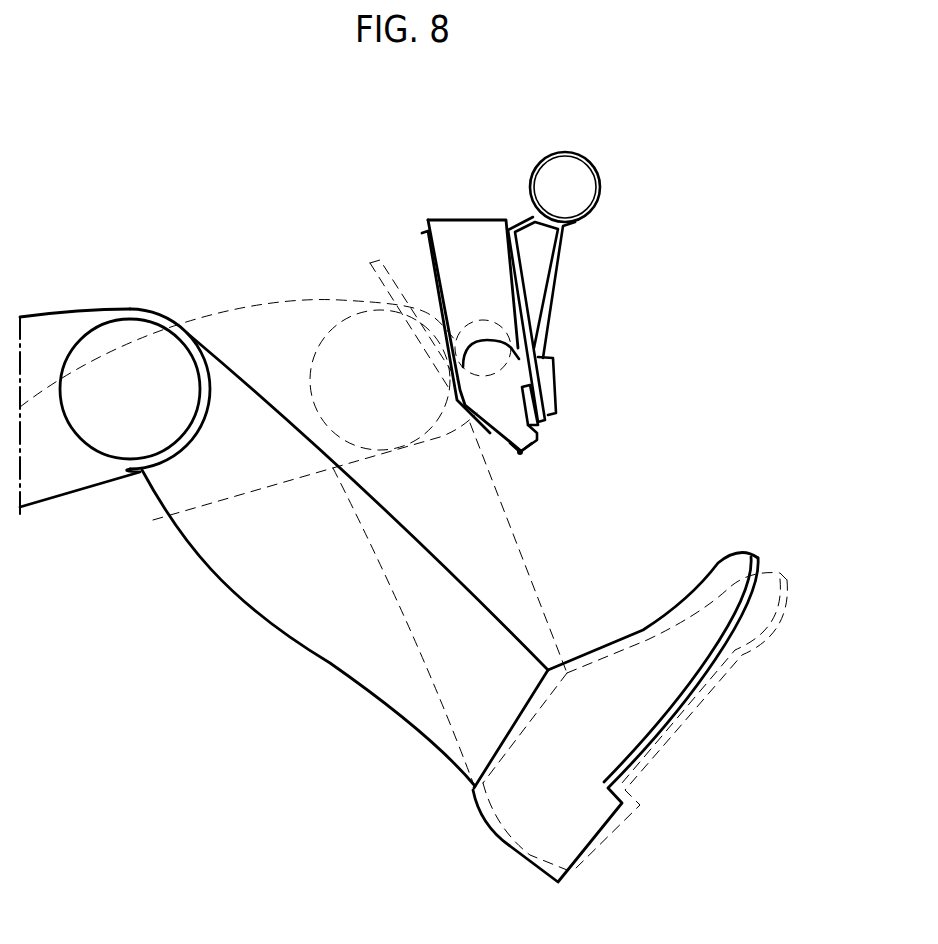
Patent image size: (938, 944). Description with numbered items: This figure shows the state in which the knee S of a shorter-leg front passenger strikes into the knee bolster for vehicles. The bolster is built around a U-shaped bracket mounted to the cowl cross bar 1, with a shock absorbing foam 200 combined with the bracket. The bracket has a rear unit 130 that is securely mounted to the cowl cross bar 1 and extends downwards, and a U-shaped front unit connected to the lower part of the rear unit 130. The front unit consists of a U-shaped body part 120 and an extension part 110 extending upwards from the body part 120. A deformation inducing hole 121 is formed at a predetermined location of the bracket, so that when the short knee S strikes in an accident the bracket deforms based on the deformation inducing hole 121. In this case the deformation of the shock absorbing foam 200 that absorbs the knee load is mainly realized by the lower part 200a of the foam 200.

The cowl cross bar 1 is at (600, 177).
The extension part 110 is at (425, 262).
The U-shaped body part 120 is at (498, 420).
The deformation inducing hole 121 is at (520, 452).
The rear unit 130 is at (522, 289).
The shock absorbing foam 200 is at (450, 217).
The lower part of the foam 200a is at (515, 335).
The short knee S is at (343, 363).